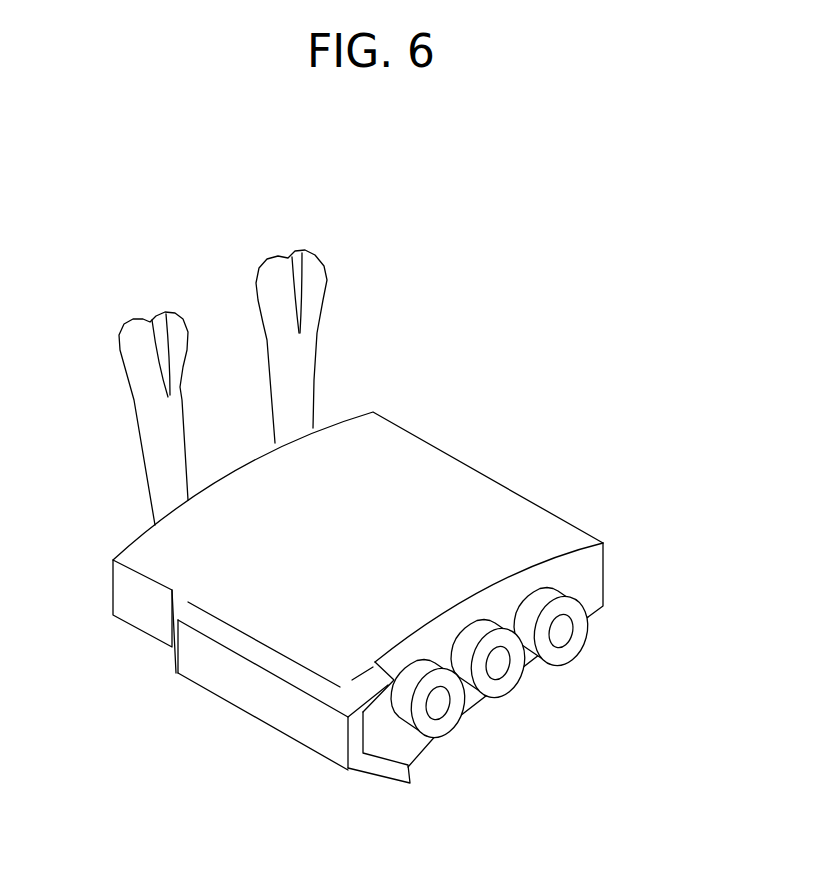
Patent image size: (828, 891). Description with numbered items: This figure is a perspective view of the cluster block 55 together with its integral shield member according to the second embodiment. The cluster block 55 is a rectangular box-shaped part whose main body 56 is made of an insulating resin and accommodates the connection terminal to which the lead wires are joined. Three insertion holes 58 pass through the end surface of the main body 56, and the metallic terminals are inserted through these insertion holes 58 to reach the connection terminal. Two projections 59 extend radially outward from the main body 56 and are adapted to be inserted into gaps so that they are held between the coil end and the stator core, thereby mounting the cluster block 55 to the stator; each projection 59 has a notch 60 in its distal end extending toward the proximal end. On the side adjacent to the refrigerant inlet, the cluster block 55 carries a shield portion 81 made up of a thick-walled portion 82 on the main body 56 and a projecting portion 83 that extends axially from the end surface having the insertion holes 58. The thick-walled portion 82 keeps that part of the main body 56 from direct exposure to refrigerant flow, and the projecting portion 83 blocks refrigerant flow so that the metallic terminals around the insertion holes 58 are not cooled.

The cluster block 55 is at (519, 493).
The main body 56 is at (415, 487).
The insertion holes 58 is at (440, 703).
The projections 59 is at (187, 410).
The notch 60 is at (153, 318).
The shield portion 81 is at (254, 696).
The thick-walled portion 82 is at (212, 668).
The projecting portion 83 is at (375, 782).